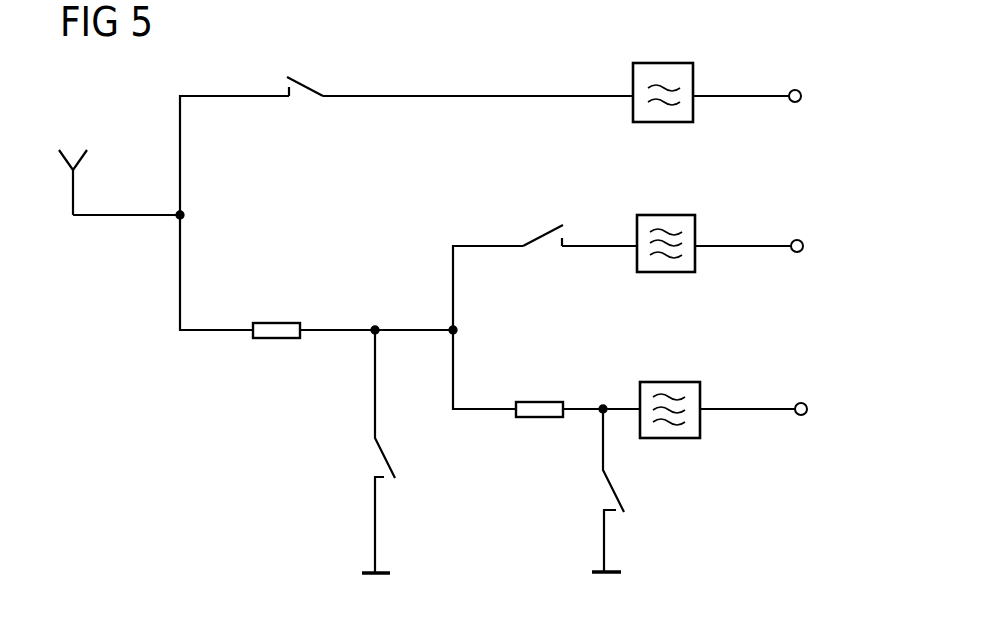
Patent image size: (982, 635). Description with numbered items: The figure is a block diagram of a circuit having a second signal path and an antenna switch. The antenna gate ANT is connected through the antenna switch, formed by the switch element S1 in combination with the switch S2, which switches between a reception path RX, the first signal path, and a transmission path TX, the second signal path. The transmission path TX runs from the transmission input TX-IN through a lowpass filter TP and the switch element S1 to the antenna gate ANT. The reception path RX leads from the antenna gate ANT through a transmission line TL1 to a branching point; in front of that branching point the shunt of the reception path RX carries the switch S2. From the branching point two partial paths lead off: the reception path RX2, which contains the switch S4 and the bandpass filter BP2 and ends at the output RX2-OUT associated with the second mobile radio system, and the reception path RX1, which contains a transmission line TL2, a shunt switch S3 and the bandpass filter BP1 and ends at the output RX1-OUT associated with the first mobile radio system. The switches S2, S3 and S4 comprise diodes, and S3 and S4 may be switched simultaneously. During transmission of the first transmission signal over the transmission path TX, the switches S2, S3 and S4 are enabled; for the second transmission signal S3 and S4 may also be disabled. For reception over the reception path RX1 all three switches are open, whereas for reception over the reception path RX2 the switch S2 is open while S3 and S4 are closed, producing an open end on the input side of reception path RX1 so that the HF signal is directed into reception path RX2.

The antenna gate ANT is at (126, 215).
The transmission path TX is at (493, 96).
The switch element S1 is at (307, 83).
The lowpass filter TP is at (662, 63).
The transmission input TX-IN is at (795, 89).
The reception path RX is at (180, 277).
The transmission line TL1 is at (275, 323).
The switch S2 is at (383, 459).
The reception path RX2 is at (488, 246).
The switch S4 is at (545, 232).
The bandpass filter BP2 is at (665, 215).
The output RX2-OUT is at (797, 239).
The reception path RX1 is at (488, 417).
The transmission line TL2 is at (538, 402).
The switch S3 is at (611, 497).
The bandpass filter BP1 is at (667, 382).
The output RX1-OUT is at (801, 403).